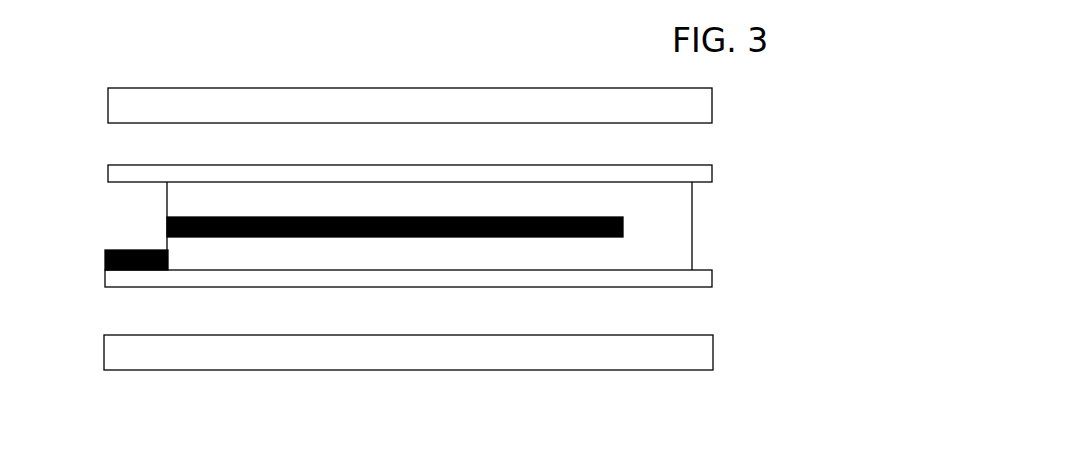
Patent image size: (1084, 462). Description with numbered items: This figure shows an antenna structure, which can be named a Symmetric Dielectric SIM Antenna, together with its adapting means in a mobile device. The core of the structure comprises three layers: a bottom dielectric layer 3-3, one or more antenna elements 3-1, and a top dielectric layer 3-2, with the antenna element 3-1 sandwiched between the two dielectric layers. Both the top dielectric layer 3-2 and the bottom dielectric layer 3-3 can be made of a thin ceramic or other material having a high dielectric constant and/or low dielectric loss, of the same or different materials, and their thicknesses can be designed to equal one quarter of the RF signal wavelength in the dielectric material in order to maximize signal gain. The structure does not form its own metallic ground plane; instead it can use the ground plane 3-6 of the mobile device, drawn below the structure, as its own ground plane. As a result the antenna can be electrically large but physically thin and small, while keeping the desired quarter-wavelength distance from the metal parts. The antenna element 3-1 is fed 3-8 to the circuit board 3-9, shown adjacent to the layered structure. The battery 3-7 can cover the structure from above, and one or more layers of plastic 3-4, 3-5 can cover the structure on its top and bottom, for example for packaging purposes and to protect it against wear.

The battery 3-7 is at (712, 108).
The layer of plastic 3-4 is at (712, 176).
The top dielectric layer 3-2 is at (678, 203).
The antenna element 3-1 is at (623, 233).
The bottom dielectric layer 3-3 is at (678, 254).
The layer of plastic 3-5 is at (712, 283).
The ground plane 3-6 is at (545, 370).
The feed 3-8 is at (152, 250).
The circuit board 3-9 is at (105, 262).